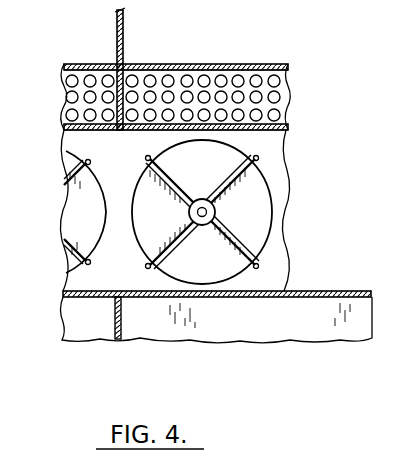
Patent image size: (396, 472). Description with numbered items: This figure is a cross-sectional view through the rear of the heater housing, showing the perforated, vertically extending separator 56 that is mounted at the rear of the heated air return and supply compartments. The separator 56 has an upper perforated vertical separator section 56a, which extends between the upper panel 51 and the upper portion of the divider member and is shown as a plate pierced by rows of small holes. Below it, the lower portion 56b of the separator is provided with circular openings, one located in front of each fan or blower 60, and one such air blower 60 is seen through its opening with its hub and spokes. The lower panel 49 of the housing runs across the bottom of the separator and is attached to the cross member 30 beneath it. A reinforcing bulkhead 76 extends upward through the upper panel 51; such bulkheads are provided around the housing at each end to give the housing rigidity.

The cross member 30 is at (262, 330).
The lower panel 49 is at (311, 291).
The upper panel 51 is at (245, 65).
The perforated vertically extending separator 56 is at (291, 179).
The upper perforated vertical separator section 56a is at (72, 87).
The lower portion of separator 56b is at (136, 163).
The air blower 60 is at (245, 252).
The reinforcing bulkhead 76 is at (123, 46).